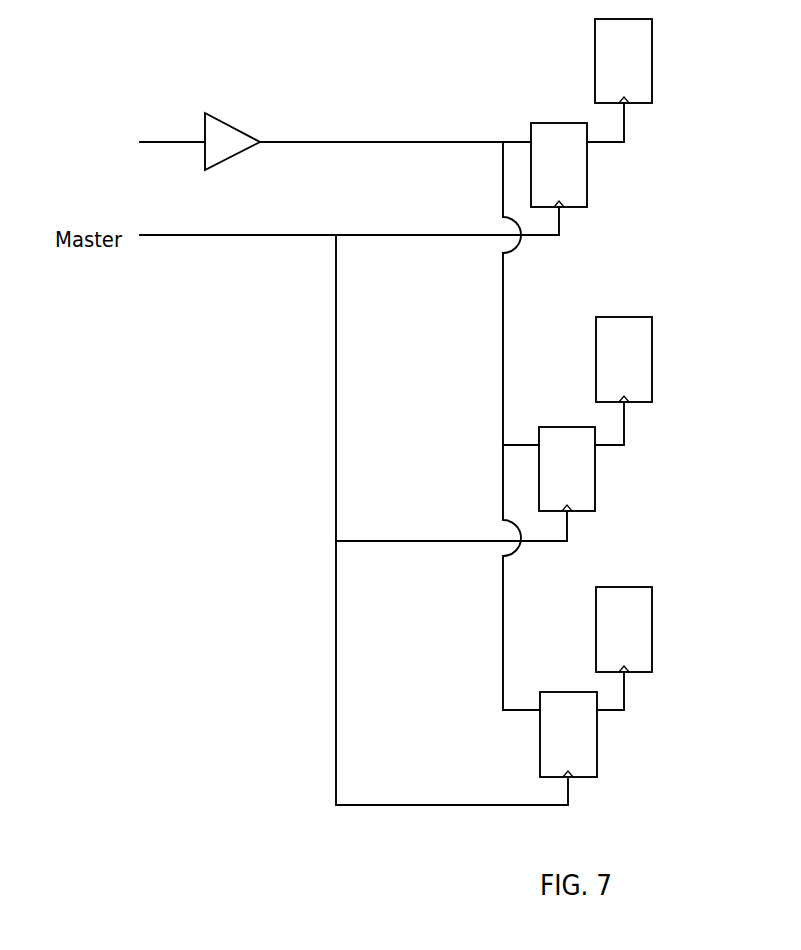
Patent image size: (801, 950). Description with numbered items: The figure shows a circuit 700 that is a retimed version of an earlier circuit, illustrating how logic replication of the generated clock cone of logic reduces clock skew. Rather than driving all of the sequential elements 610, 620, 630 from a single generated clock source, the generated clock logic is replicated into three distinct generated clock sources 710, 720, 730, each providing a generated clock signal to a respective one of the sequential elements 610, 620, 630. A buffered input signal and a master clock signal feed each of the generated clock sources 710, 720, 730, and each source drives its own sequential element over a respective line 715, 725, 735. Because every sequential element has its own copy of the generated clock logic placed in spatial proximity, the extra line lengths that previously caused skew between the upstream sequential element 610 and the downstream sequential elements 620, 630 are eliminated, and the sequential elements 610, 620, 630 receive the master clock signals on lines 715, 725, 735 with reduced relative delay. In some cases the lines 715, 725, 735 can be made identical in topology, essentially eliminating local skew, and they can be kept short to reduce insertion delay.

The circuit 700 is at (484, 340).
The sequential element 610 is at (652, 72).
The sequential element 620 is at (652, 368).
The sequential element 630 is at (652, 633).
The generated clock source 710 is at (587, 182).
The generated clock source 720 is at (595, 482).
The generated clock source 730 is at (597, 757).
The line 715 is at (624, 123).
The line 725 is at (624, 435).
The line 735 is at (624, 693).